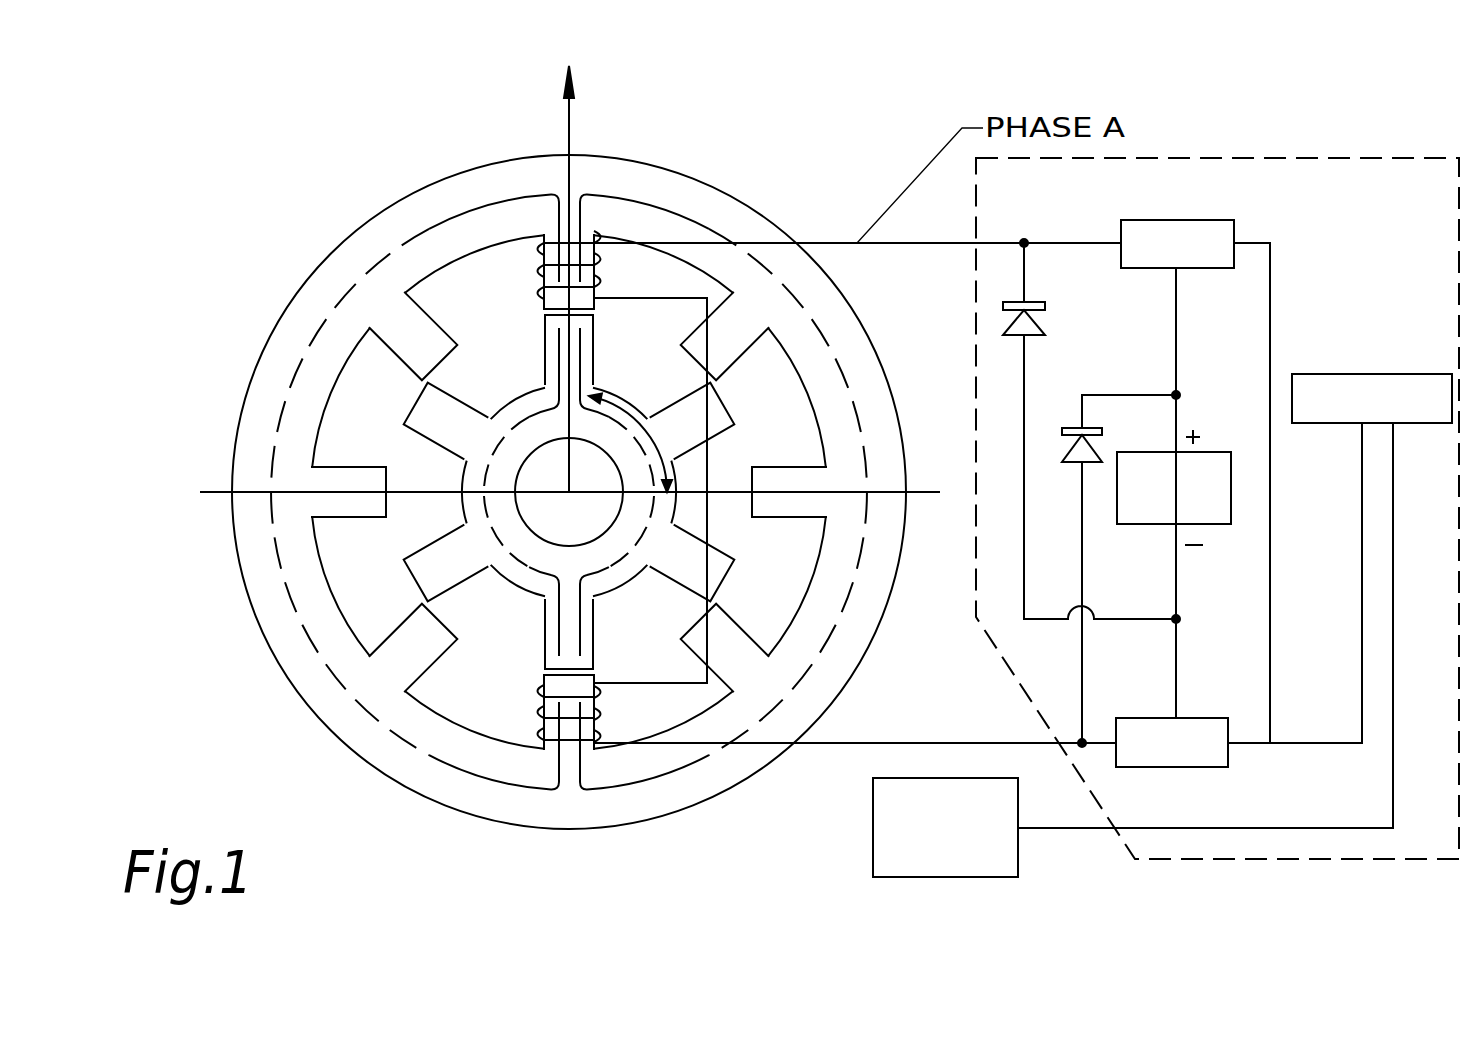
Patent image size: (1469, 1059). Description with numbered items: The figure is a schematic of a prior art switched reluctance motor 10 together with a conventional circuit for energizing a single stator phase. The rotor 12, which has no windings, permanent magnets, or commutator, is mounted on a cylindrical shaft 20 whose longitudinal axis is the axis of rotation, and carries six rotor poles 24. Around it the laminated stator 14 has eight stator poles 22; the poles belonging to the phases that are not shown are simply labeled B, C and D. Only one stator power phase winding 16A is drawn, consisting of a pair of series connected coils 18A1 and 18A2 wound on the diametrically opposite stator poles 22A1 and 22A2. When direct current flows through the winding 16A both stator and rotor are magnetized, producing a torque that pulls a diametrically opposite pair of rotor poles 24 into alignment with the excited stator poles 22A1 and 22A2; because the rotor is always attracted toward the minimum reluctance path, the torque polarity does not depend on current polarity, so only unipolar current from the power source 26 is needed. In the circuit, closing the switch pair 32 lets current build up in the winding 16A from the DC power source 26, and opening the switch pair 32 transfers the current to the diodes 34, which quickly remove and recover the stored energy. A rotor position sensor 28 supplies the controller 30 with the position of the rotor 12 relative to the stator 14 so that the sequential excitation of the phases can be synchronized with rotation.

The SR motor 10 is at (297, 219).
The rotor 12 is at (512, 592).
The stator 14 is at (452, 195).
The stator power phase winding 16A is at (543, 280).
The coil 18A1 is at (597, 283).
The coil 18A2 is at (597, 722).
The shaft 20 is at (593, 545).
The stator poles 22 is at (351, 512).
The stator pole 22A1 is at (578, 204).
The stator pole 22A2 is at (569, 775).
The rotor poles 24 is at (544, 602).
The power source 26 is at (1213, 452).
The rotor position sensor 28 is at (1018, 857).
The controller 30 is at (1340, 374).
The switch pair 32 is at (1160, 268).
The diodes 34 is at (1063, 430).